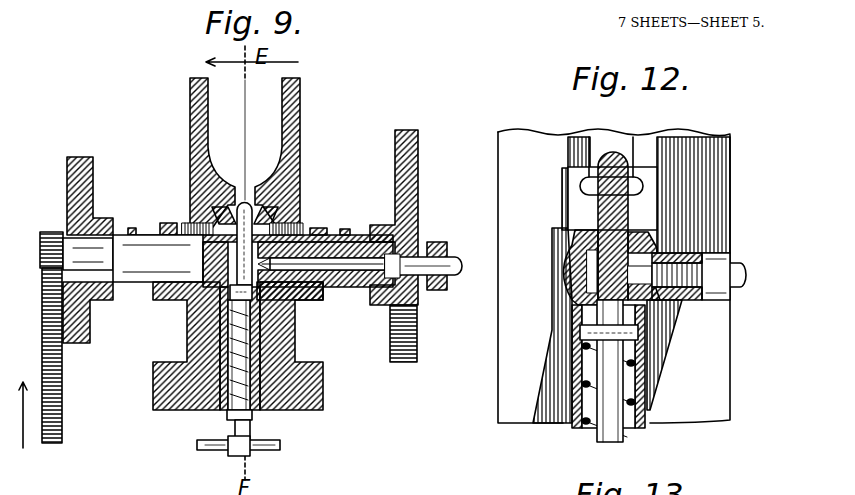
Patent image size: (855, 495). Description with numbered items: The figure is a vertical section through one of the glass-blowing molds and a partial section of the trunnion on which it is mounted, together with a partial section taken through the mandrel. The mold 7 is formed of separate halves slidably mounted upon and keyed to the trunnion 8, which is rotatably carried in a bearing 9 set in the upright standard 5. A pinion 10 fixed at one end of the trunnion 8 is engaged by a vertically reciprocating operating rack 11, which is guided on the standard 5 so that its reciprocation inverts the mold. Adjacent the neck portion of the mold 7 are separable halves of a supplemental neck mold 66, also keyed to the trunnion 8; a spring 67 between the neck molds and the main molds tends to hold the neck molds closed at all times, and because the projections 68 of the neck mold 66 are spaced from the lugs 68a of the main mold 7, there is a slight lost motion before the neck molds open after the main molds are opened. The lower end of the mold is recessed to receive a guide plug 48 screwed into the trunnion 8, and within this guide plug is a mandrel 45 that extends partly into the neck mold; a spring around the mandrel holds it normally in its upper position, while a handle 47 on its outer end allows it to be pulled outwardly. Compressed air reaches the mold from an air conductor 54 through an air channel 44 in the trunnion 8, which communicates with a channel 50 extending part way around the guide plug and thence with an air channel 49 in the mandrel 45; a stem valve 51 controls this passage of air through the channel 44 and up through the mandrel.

In FIG. 9, the upright standard 5 is at (420, 195).
In FIG. 9, the mold 7 is at (292, 178).
In FIG. 12, the mold 7 is at (640, 280).
In FIG. 9, the trunnion 8 is at (140, 285).
In FIG. 12, the trunnion 8 is at (562, 285).
In FIG. 9, the bearing 9 is at (100, 292).
In FIG. 9, the pinion 10 is at (38, 250).
In FIG. 9, the operating rack 11 is at (62, 410).
In FIG. 9, the air channel 44 is at (315, 288).
In FIG. 9, the mandrel 45 is at (252, 418).
In FIG. 12, the mandrel 45 is at (598, 225).
In FIG. 9, the handle 47 is at (265, 452).
In FIG. 9, the guide plug 48 is at (262, 408).
In FIG. 12, the guide plug 48 is at (647, 386).
In FIG. 12, the air channel 49 is at (613, 152).
In FIG. 9, the channel 50 is at (300, 365).
In FIG. 12, the channel 50 is at (643, 300).
In FIG. 12, the stem valve 51 is at (745, 266).
In FIG. 9, the air conductor 54 is at (450, 258).
In FIG. 9, the supplemental neck mold 66 is at (212, 212).
In FIG. 12, the supplemental neck mold 66 is at (640, 213).
In FIG. 9, the spring 67 is at (190, 224).
In FIG. 9, the projection 68 is at (131, 229).
In FIG. 9, the lug 68a is at (355, 174).